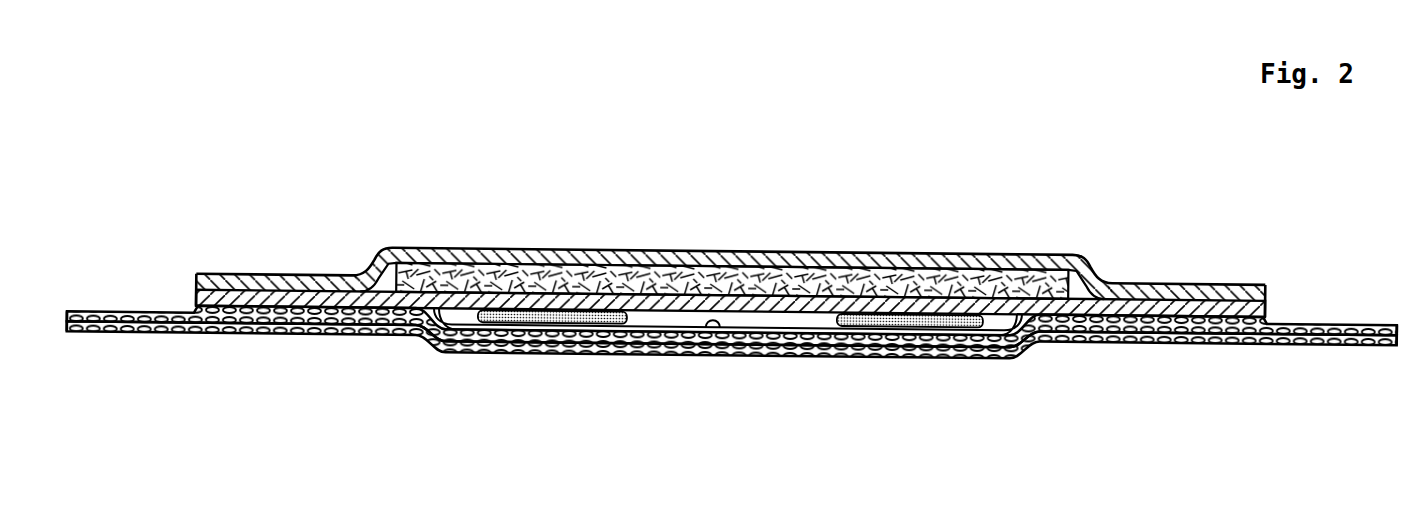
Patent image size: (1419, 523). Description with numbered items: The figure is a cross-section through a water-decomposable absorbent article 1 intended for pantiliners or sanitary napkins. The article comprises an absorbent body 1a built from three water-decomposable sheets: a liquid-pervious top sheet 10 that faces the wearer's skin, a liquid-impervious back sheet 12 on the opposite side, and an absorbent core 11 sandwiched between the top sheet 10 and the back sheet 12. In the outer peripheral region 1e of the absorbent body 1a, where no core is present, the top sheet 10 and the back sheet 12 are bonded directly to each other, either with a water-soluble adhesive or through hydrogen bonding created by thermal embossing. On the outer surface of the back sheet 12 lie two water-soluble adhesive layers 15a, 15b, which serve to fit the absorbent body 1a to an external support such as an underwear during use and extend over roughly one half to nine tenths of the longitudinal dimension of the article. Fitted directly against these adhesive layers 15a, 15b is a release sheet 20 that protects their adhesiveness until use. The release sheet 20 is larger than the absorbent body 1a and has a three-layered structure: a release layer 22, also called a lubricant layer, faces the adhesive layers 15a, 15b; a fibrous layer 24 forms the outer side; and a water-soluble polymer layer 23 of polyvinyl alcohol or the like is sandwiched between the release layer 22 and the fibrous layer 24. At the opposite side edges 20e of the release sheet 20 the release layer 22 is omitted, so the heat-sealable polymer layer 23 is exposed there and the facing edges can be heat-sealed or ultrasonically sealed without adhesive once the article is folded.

The absorbent article 1 is at (731, 205).
The absorbent body 1a is at (731, 221).
The outer peripheral region 1e is at (247, 275).
The top sheet 10 is at (645, 250).
The absorbent core 11 is at (805, 250).
The back sheet 12 is at (337, 300).
The adhesive layer 15a is at (567, 350).
The adhesive layer 15b is at (970, 357).
The release sheet 20 is at (732, 341).
The side edge of release sheet 20e is at (136, 311).
The release layer 22 is at (695, 353).
The water-soluble polymer layer 23 is at (470, 352).
The fibrous layer 24 is at (802, 357).